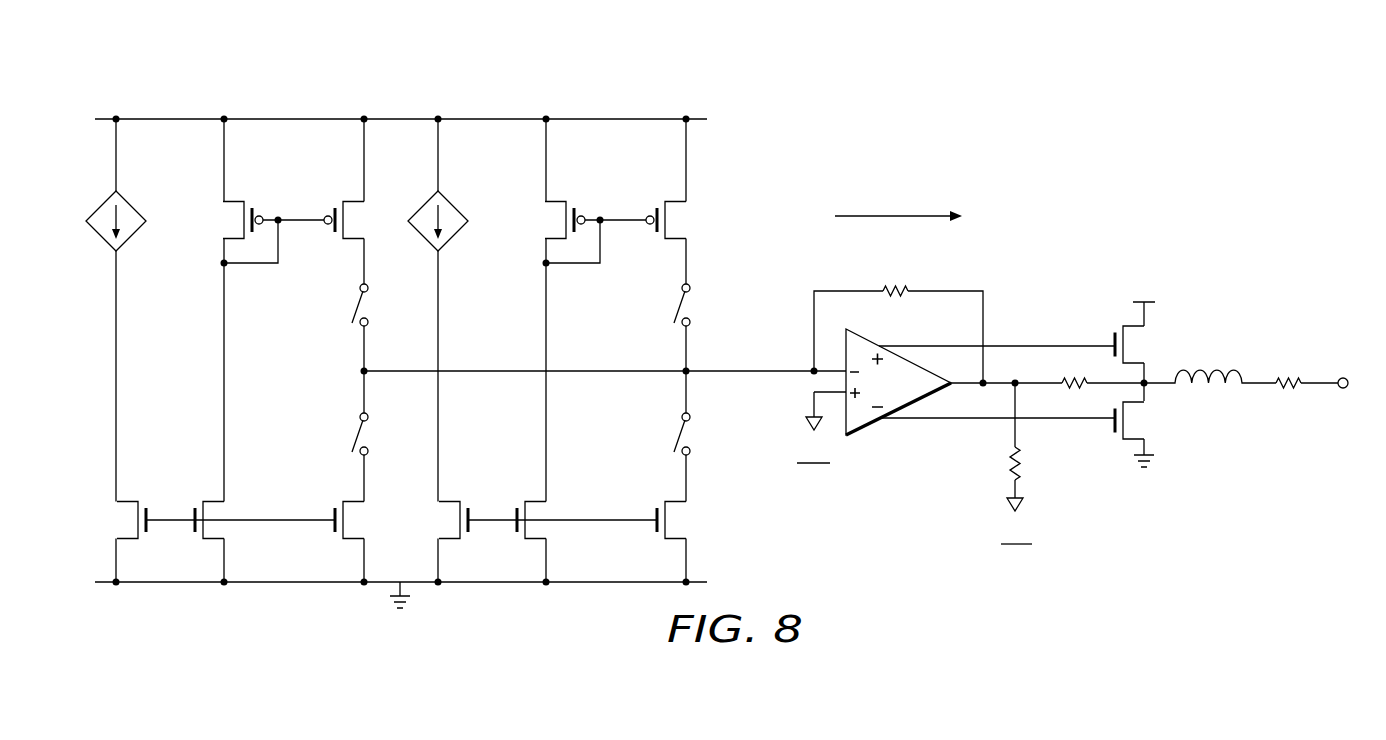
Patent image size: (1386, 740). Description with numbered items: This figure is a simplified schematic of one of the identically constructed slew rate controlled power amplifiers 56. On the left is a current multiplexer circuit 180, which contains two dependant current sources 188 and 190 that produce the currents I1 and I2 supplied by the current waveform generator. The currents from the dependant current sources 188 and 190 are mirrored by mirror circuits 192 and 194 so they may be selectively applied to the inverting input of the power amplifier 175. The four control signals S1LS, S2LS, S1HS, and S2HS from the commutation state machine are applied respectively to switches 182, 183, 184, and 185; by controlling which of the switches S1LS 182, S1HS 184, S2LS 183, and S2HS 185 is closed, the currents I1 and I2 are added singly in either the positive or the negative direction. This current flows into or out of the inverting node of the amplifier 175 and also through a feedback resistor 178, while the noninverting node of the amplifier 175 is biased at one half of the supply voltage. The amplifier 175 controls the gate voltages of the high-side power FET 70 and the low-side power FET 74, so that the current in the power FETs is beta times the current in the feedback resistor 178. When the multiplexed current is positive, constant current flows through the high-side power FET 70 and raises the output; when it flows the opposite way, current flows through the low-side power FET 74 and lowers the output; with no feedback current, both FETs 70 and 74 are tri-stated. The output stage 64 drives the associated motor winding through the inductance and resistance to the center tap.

The current multiplexer circuit 180 is at (665, 104).
The dependant current source 188 is at (102, 204).
The dependant current source 190 is at (421, 206).
The mirror circuit 192 is at (293, 198).
The mirror circuit 194 is at (614, 197).
The switch S1LS 182 is at (354, 308).
The switch S2LS 183 is at (676, 308).
The switch S1HS 184 is at (354, 438).
The switch S2HS 185 is at (676, 438).
The slew rate controlled power amplifier 56 is at (1020, 166).
The feedback resistor 178 is at (898, 284).
The power amplifier 175 is at (862, 432).
The output stage 64 is at (1188, 307).
The high-side power FET 70 is at (1114, 330).
The low-side power FET 74 is at (1114, 436).